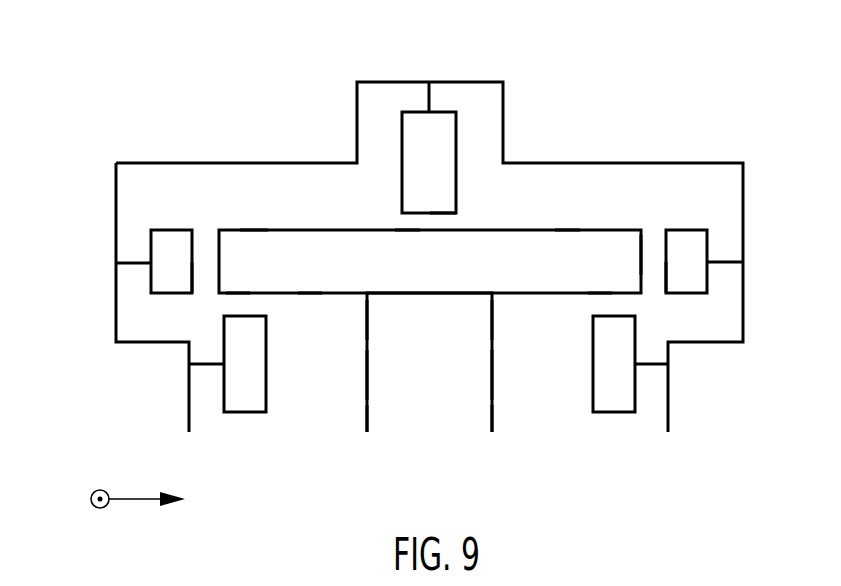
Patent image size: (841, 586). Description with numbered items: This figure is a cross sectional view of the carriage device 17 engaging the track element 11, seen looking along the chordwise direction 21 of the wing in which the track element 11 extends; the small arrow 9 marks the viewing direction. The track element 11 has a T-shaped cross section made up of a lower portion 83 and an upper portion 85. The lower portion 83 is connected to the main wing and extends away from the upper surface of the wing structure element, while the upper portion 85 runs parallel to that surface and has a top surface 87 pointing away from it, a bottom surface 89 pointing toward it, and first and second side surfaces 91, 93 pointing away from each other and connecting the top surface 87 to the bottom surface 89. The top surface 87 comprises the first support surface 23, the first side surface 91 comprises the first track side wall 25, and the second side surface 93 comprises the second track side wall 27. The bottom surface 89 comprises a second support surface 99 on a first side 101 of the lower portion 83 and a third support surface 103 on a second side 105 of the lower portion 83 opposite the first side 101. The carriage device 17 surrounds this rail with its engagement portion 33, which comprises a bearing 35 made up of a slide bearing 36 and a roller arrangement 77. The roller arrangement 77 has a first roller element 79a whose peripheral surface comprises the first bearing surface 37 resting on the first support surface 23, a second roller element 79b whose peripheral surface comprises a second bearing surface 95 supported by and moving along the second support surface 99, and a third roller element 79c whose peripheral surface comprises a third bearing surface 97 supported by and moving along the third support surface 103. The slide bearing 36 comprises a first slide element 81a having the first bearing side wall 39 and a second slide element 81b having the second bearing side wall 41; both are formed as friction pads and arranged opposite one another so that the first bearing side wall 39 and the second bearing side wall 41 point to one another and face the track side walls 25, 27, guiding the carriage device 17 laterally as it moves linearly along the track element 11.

The viewing direction arrow 9 is at (133, 499).
The track element 11 is at (445, 381).
The carriage device 17 is at (598, 136).
The chordwise direction 21 is at (91, 499).
The first support surface 23 is at (408, 230).
The first track side wall 25 is at (680, 190).
The second track side wall 27 is at (217, 257).
The engagement portion 33 is at (429, 269).
The bearing 35 is at (429, 269).
The slide bearing 36 is at (152, 238).
The first bearing surface 37 is at (455, 223).
The first bearing side wall 39 is at (662, 283).
The second bearing side wall 41 is at (207, 287).
The roller arrangement 77 is at (462, 248).
The first roller element 79a is at (440, 130).
The second roller element 79b is at (607, 375).
The third roller element 79c is at (247, 405).
The first slide element 81a is at (695, 272).
The second slide element 81b is at (163, 272).
The lower portion 83 is at (452, 402).
The upper portion 85 is at (253, 242).
The top surface 87 is at (567, 230).
The bottom surface 89 is at (310, 293).
The first side surface 91 is at (642, 250).
The second side surface 93 is at (389, 200).
The second bearing surface 95 is at (630, 312).
The third bearing surface 97 is at (263, 303).
The second support surface 99 is at (600, 295).
The first side 101 is at (536, 327).
The third support surface 103 is at (238, 295).
The second side 105 is at (360, 328).